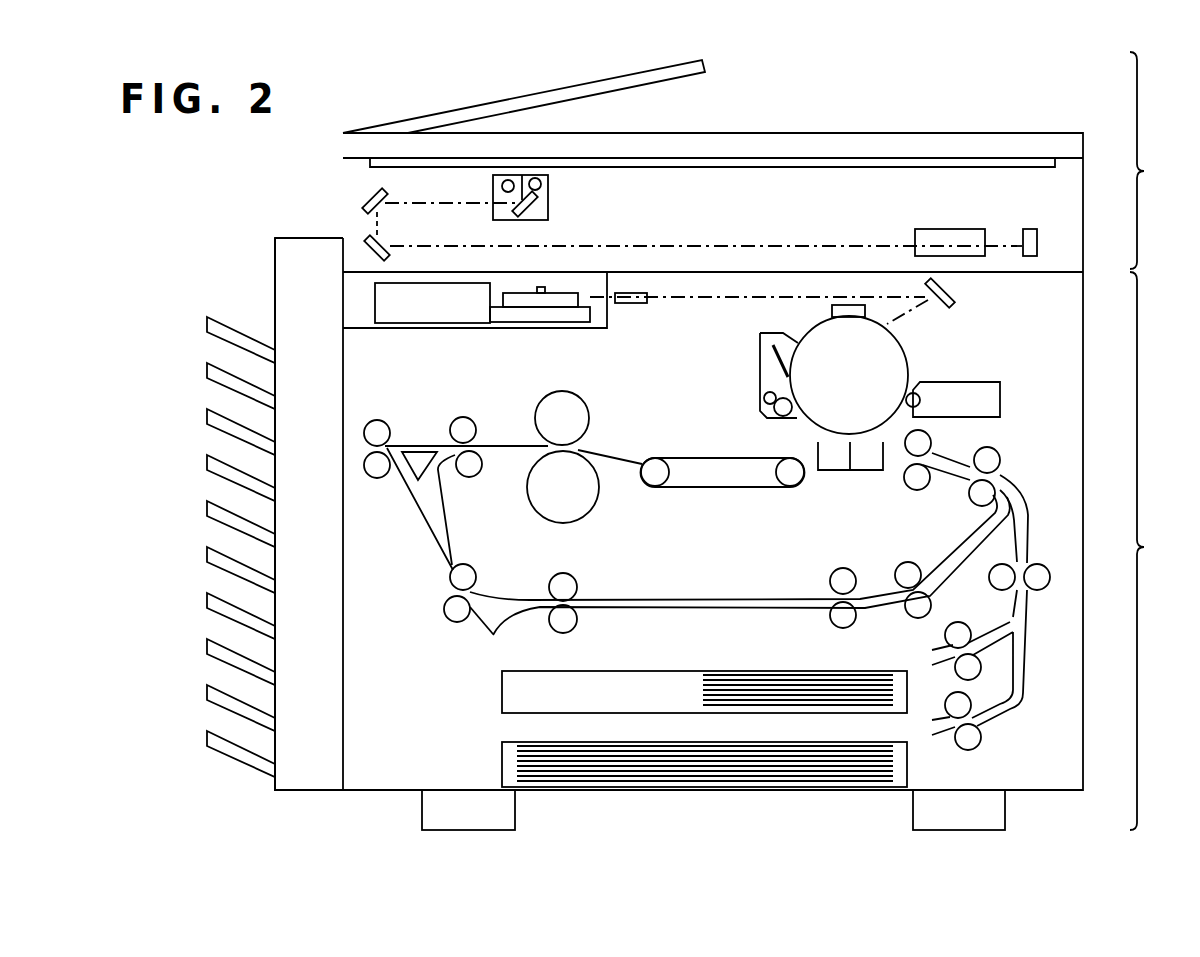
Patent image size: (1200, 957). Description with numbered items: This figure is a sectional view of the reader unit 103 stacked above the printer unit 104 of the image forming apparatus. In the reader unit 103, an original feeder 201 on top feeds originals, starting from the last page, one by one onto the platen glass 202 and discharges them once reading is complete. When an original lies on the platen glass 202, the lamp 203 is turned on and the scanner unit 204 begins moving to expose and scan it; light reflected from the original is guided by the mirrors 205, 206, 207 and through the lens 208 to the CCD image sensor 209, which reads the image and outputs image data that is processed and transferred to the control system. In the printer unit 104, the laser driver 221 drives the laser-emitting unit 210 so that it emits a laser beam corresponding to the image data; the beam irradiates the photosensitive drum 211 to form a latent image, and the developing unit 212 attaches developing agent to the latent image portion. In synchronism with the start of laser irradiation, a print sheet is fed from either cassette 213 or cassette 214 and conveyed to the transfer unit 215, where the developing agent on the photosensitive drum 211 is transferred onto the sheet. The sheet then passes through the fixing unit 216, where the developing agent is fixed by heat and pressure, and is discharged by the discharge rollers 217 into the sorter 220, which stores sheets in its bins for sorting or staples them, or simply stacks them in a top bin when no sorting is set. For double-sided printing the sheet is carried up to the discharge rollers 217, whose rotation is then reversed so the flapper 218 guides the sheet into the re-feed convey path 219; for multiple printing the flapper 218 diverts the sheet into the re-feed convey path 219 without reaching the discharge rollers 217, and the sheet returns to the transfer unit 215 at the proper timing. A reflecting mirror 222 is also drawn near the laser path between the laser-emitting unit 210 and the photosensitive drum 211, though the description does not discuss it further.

The reader unit 103 is at (765, 162).
The printer unit 104 is at (767, 551).
The original feeder 201 is at (462, 110).
The platen glass 202 is at (992, 157).
The lamp 203 is at (533, 177).
The scanner unit 204 is at (548, 205).
The mirror 205 is at (533, 207).
The mirror 206 is at (364, 203).
The mirror 207 is at (387, 249).
The lens 208 is at (932, 228).
The CCD image sensor 209 is at (1027, 228).
The laser-emitting unit 210 is at (578, 296).
The photosensitive drum 211 is at (897, 358).
The developing unit 212 is at (1000, 404).
The cassette 213 is at (763, 677).
The cassette 214 is at (860, 777).
The transfer unit 215 is at (857, 470).
The fixing unit 216 is at (585, 468).
The discharge rollers 217 is at (366, 466).
The flapper 218 is at (420, 460).
The re-feed convey path 219 is at (665, 597).
The sorter 220 is at (298, 775).
The laser driver 221 is at (374, 299).
The reflecting mirror 222 is at (960, 288).